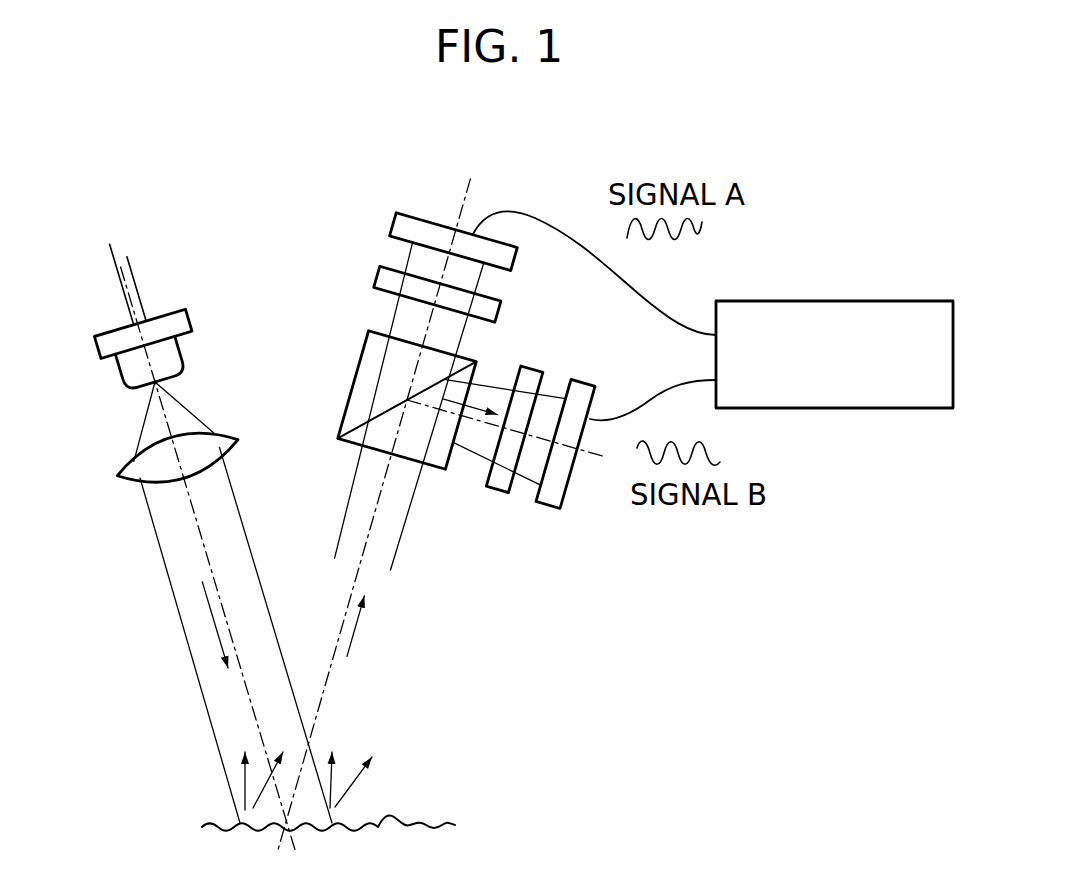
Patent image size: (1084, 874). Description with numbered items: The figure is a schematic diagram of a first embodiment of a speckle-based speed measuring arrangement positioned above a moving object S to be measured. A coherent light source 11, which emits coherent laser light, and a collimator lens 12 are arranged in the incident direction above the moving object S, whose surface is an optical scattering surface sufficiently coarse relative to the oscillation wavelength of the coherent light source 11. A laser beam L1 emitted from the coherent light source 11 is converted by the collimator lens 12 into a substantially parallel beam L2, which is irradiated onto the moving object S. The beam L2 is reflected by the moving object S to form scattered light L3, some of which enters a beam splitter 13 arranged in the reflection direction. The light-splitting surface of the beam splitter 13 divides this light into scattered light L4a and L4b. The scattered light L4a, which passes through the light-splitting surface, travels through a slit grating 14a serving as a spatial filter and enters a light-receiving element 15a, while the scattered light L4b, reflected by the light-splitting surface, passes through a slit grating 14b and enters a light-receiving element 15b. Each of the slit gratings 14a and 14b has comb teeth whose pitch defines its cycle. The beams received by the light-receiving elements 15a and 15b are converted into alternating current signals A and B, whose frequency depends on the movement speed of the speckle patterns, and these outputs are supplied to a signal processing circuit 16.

The coherent light source 11 is at (103, 337).
The collimator lens 12 is at (125, 477).
The beam splitter 13 is at (356, 377).
The slit grating 14a is at (378, 281).
The slit grating 14b is at (495, 487).
The light-receiving element 15a is at (393, 232).
The light-receiving element 15b is at (548, 506).
The signal processing circuit 16 is at (882, 408).
The laser beam L1 is at (143, 425).
The substantially parallel beam L2 is at (180, 620).
The scattered light L3 is at (373, 513).
The scattered light L4a is at (401, 312).
The scattered light L4b is at (490, 390).
The moving object S is at (437, 822).